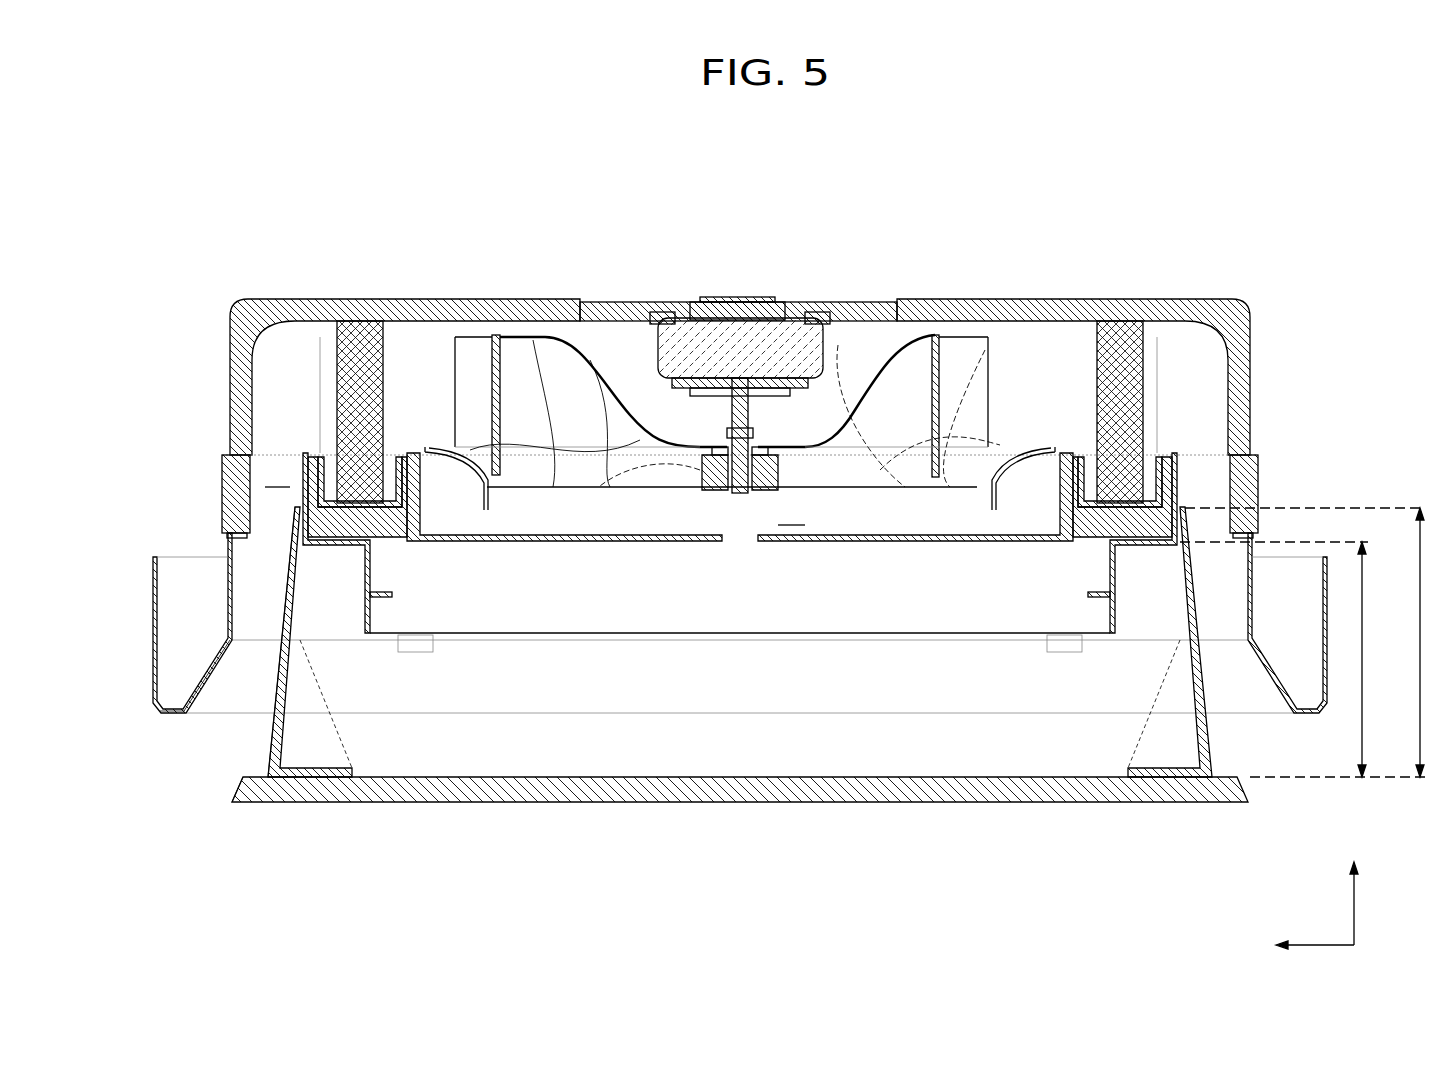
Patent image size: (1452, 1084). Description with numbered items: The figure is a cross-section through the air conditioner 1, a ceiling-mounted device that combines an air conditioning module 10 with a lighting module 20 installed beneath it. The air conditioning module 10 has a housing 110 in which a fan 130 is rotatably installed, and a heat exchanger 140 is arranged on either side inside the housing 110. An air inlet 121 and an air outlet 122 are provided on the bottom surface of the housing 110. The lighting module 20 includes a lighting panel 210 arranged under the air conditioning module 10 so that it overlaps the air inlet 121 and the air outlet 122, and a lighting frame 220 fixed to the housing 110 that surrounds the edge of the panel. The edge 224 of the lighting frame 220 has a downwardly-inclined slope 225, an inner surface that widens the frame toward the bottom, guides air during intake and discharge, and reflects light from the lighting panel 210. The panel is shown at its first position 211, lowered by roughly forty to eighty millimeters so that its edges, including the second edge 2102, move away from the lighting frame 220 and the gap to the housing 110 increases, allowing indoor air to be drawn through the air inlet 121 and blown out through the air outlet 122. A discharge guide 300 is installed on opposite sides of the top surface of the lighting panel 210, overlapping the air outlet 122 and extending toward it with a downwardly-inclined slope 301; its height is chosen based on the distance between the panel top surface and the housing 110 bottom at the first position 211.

The air conditioner 1 is at (1362, 275).
The air conditioning module 10 is at (1262, 332).
The lighting module 20 is at (1298, 528).
The housing 110 is at (235, 496).
The air inlet 121 is at (790, 527).
The air outlet 122 is at (277, 485).
The fan 130 is at (847, 392).
The heat exchanger 140 is at (362, 335).
The lighting panel 210 is at (583, 800).
The first position 211 is at (740, 789).
The second edge 2102 is at (241, 778).
The lighting frame 220 is at (140, 658).
The edge 224 is at (207, 674).
The slope 225 is at (201, 692).
The discharge guide 300 is at (287, 708).
The slope 301 is at (268, 733).